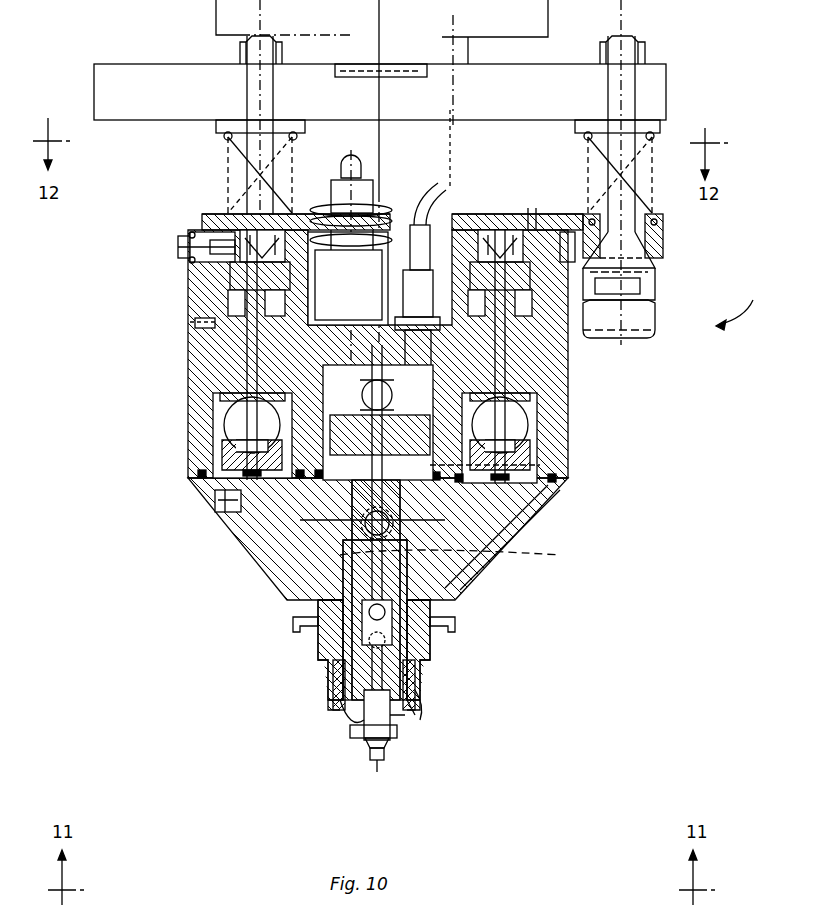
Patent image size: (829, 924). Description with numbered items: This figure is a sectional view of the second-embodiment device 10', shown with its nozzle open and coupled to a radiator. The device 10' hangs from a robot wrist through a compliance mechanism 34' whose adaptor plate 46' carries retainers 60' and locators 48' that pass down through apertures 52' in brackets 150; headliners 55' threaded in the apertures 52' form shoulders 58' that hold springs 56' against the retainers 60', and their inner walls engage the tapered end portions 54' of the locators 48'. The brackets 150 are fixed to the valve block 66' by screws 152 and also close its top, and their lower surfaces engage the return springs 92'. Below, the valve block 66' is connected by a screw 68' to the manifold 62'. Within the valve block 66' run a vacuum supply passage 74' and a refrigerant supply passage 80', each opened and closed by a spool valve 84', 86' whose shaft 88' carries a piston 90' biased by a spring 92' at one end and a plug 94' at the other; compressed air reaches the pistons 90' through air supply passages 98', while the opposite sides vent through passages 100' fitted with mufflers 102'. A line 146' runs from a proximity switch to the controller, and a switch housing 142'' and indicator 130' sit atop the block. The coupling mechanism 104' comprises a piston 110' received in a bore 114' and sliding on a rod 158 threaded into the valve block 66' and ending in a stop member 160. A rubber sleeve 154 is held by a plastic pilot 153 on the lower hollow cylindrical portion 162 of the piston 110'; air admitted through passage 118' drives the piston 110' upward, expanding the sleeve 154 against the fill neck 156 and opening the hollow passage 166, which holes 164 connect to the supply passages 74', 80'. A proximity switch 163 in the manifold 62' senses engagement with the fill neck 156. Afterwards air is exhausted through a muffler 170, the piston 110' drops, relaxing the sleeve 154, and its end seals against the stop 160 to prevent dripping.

The device 10' is at (738, 300).
The compliance mechanism 34' is at (413, 86).
The adaptor plate 46' is at (470, 42).
The locator 48' is at (424, 134).
The aperture 52' is at (647, 232).
The end portion 54' is at (647, 266).
The headliner 55' is at (650, 234).
The spring 56' is at (468, 175).
The shoulder 58' is at (647, 305).
The retainer 60' is at (450, 110).
The manifold 62' is at (414, 539).
The valve block 66' is at (414, 346).
The screw 68' is at (196, 516).
The vacuum supply passage 74' is at (208, 435).
The refrigerant supply passage 80' is at (551, 438).
The spool valve 84' is at (328, 304).
The spool valve 86' is at (590, 360).
The shaft 88' is at (382, 356).
The piston 90' is at (351, 240).
The spring 92' is at (407, 212).
The plug 94' is at (382, 458).
The air supply passage 98' is at (169, 328).
The passage 100' is at (344, 226).
The muffler 102' is at (177, 231).
The coupling mechanism 104' is at (411, 655).
The piston 110' is at (464, 502).
The bore 114' is at (274, 414).
The passage 118' is at (243, 557).
The indicator lamp 130' is at (365, 191).
The switch box 142'' is at (348, 281).
The line 146' is at (442, 270).
The bracket 150 is at (230, 214).
The screw 152 is at (532, 205).
The plastic pilot 153 is at (318, 628).
The rubber sleeve 154 is at (410, 712).
The fill neck 156 is at (415, 695).
The rod 158 is at (350, 560).
The stop member 160 is at (398, 732).
The hollow cylindrical portion 162 is at (420, 560).
The proximity switch 163 is at (535, 562).
The hole 164 is at (335, 665).
The hollow passage 166 is at (334, 690).
The muffler 170 is at (355, 345).